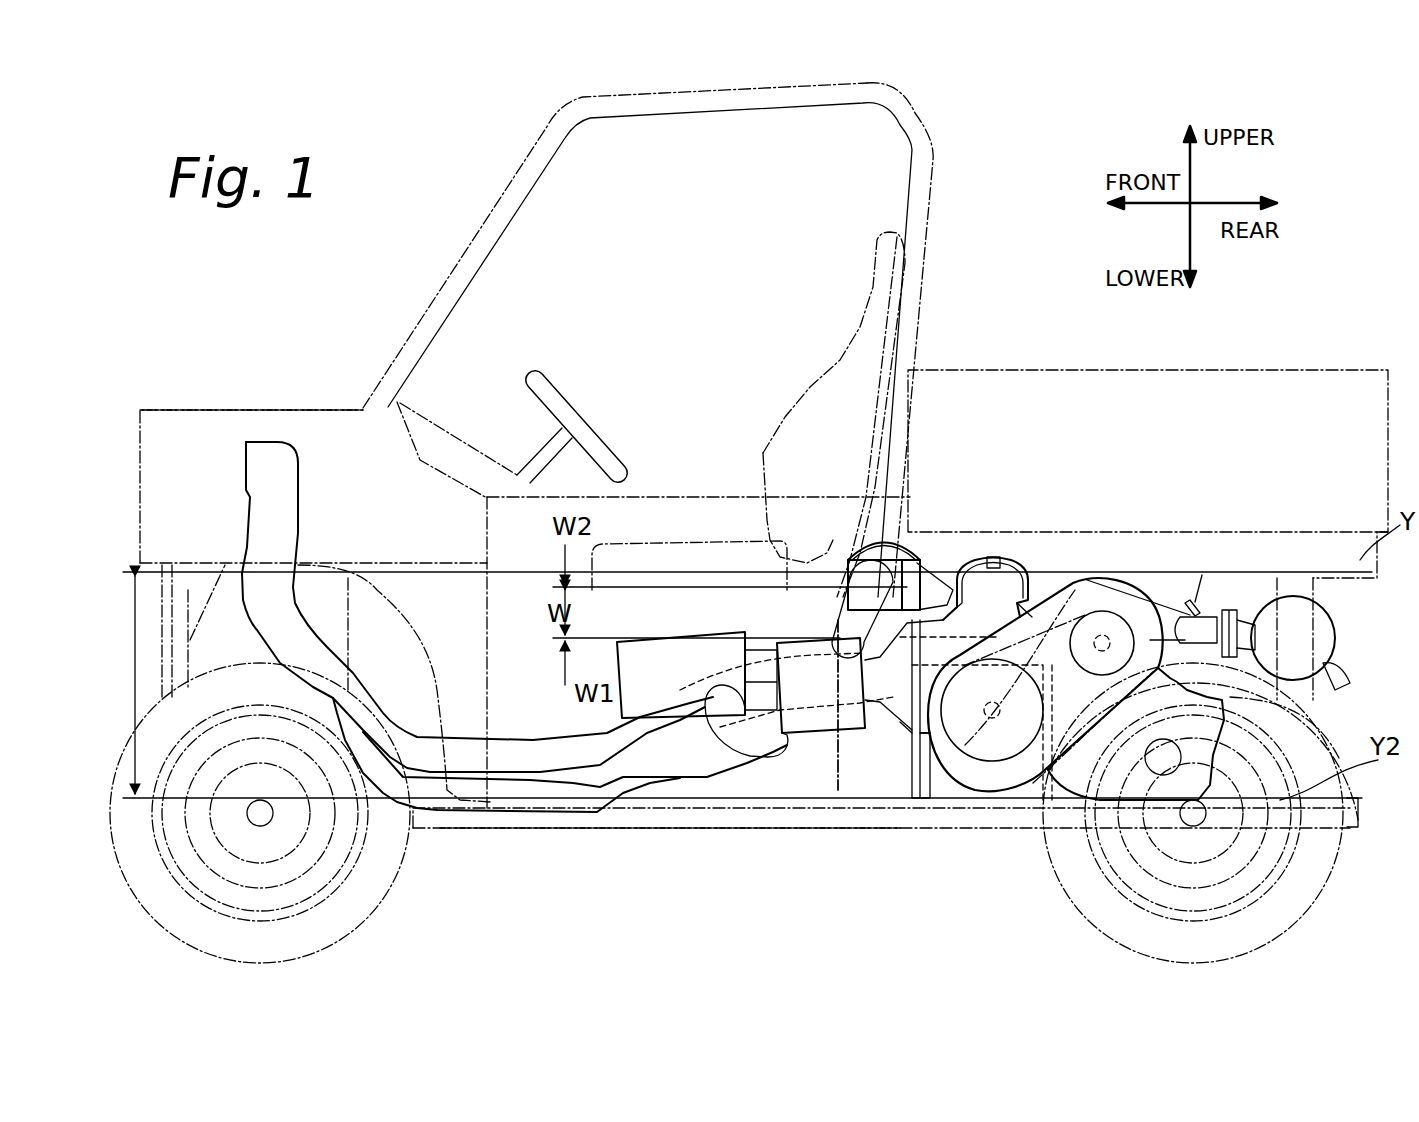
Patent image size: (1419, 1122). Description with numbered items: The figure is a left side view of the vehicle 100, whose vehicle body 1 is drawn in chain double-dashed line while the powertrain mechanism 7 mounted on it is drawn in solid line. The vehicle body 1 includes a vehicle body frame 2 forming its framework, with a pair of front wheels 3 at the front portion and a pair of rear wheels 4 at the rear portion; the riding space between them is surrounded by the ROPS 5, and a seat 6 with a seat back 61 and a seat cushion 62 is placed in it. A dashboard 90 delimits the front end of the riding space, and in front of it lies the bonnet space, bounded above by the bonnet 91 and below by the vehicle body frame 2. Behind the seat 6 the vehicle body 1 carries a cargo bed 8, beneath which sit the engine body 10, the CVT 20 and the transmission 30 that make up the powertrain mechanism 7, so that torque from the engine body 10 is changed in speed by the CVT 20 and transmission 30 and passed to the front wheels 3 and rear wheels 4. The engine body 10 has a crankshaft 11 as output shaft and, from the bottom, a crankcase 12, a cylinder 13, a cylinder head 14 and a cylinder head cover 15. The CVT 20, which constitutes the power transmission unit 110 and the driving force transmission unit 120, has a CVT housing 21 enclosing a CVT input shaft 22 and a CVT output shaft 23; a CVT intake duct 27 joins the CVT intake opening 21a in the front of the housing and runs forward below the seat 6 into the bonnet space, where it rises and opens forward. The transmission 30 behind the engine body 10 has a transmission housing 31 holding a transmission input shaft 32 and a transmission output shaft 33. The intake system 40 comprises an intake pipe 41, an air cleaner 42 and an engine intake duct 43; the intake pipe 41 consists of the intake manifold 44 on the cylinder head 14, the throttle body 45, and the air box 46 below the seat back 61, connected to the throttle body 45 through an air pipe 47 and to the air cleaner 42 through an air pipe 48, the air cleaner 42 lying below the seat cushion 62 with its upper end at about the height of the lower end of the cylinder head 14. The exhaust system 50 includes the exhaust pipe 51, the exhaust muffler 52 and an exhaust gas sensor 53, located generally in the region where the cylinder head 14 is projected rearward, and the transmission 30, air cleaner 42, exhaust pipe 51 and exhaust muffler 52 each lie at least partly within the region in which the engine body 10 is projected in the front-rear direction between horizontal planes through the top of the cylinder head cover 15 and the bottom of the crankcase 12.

The vehicle body 1 is at (338, 356).
The vehicle body frame 2 is at (773, 828).
The front wheels 3 is at (373, 910).
The rear wheels 4 is at (1053, 867).
The ROPS 5 is at (918, 118).
The seat 6 is at (800, 393).
The powertrain mechanism 7 is at (887, 782).
The cargo bed 8 is at (1237, 388).
The engine body 10 is at (1005, 545).
The crankshaft 11 is at (982, 788).
The crankcase 12 is at (930, 790).
The cylinder 13 is at (947, 630).
The cylinder head 14 is at (985, 597).
The cylinder head cover 15 is at (1010, 563).
The CVT 20 is at (1103, 617).
The CVT housing 21 is at (1000, 783).
The CVT intake opening 21a is at (873, 730).
The CVT input shaft 22 is at (976, 806).
The CVT output shaft 23 is at (1163, 617).
The CVT intake duct 27 is at (537, 750).
The transmission 30 is at (1067, 787).
The transmission housing 31 is at (1300, 693).
The transmission input shaft 32 is at (1150, 571).
The transmission output shaft 33 is at (1270, 815).
The intake system 40 is at (580, 840).
The intake pipe 41 is at (835, 560).
The air cleaner 42 is at (681, 675).
The engine intake duct 43 is at (683, 765).
The intake manifold 44 is at (877, 540).
The throttle body 45 is at (893, 555).
The air box 46 is at (786, 705).
The air pipe 47 is at (853, 612).
The air pipe 48 is at (757, 657).
The exhaust system 50 is at (1233, 553).
The exhaust pipe 51 is at (1178, 617).
The exhaust muffler 52 is at (1300, 643).
The exhaust gas sensor 53 is at (1193, 593).
The seat back 61 is at (840, 360).
The seat cushion 62 is at (728, 538).
The dashboard 90 is at (422, 418).
The bonnet 91 is at (237, 408).
The vehicle 100 is at (487, 176).
The power transmission unit 110 is at (1137, 518).
The driving force transmission unit 120 is at (1179, 531).